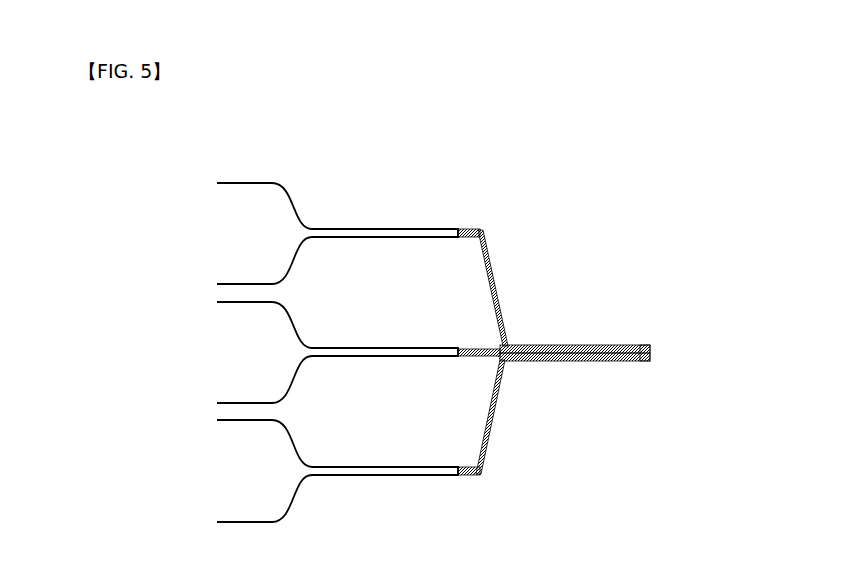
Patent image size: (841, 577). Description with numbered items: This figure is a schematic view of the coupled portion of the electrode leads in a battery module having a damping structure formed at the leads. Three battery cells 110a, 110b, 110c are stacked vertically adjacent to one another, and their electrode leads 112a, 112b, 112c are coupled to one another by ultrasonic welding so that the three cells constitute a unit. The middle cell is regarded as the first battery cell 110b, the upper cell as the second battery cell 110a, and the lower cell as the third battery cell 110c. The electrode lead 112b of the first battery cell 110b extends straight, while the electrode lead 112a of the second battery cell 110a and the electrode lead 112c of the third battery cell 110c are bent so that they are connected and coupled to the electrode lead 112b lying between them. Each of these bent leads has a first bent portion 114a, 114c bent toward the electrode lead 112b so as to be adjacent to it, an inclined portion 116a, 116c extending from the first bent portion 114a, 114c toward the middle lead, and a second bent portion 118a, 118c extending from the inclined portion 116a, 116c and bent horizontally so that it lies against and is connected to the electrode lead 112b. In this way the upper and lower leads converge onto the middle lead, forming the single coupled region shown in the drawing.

The second battery cell 110a is at (246, 244).
The first battery cell 110b is at (243, 364).
The third battery cell 110c is at (240, 470).
The electrode lead of the second battery cell 112a is at (610, 346).
The electrode lead of the first battery cell 112b is at (641, 347).
The electrode lead of the third battery cell 112c is at (632, 361).
The first bent portion 114a is at (481, 227).
The first bent portion 114c is at (482, 478).
The inclined portion 116a is at (493, 267).
The inclined portion 116c is at (498, 417).
The second bent portion 118a is at (509, 339).
The second bent portion 118c is at (509, 364).